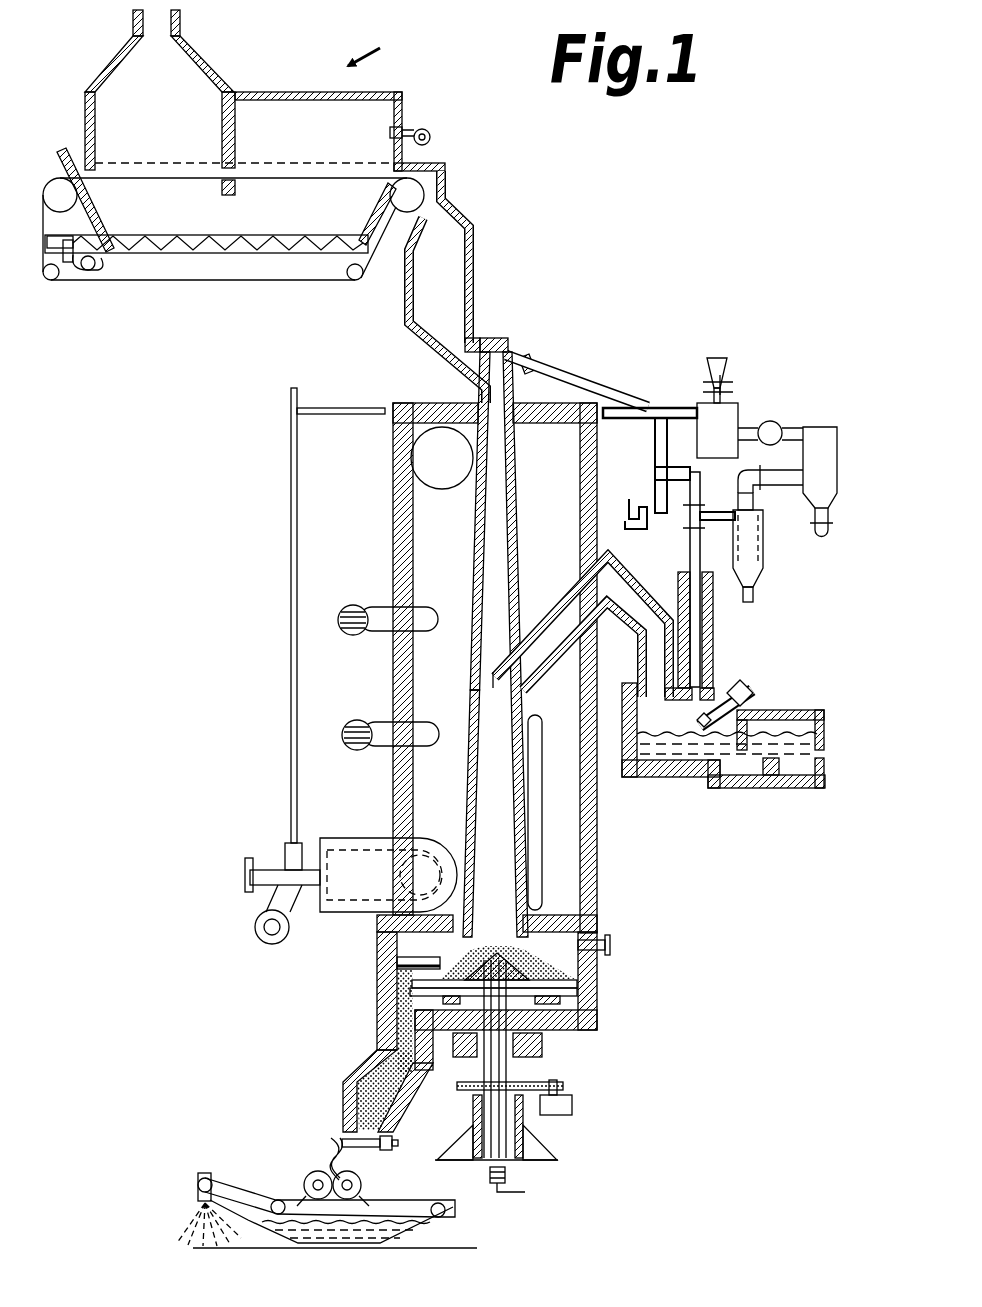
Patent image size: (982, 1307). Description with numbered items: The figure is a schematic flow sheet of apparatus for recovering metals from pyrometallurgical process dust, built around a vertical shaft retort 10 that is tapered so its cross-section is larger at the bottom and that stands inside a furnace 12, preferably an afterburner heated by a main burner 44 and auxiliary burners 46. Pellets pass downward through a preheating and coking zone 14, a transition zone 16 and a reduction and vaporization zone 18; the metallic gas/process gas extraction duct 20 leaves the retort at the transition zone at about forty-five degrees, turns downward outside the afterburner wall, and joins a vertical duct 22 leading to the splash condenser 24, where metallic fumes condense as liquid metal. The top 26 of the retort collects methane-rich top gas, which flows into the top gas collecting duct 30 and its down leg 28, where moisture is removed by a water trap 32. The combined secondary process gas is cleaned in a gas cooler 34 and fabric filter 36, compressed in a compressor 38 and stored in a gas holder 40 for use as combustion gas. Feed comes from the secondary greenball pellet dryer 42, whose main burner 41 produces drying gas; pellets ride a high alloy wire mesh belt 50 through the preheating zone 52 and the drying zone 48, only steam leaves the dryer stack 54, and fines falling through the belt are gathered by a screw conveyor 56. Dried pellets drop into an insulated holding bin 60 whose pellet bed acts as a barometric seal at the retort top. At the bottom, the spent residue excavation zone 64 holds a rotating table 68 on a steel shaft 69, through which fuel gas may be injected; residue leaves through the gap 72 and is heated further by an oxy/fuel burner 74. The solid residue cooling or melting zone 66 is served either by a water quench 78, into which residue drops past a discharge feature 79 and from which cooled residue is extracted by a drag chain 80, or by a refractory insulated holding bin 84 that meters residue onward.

The vertical shaft retort 10 is at (497, 644).
The furnace 12 is at (395, 500).
The preheating and coking zone 14 is at (462, 673).
The transition zone 16 is at (467, 673).
The reduction and vaporization zone 18 is at (530, 720).
The metallic gas/process gas extraction duct 20 is at (560, 597).
The vertical duct 22 is at (628, 626).
The splash condenser 24 is at (823, 712).
The top of the shaft retort 26 is at (511, 380).
The down leg 28 is at (656, 465).
The top gas collecting duct 30 is at (586, 372).
The water trap 32 is at (662, 532).
The gas cooler 34 is at (768, 558).
The fabric filter 36 is at (838, 453).
The compressor 38 is at (777, 420).
The gas holder 40 is at (742, 406).
The main burner of the dryer 41 is at (431, 137).
The secondary greenball pellet dryer 42 is at (379, 42).
The main burner 44 is at (261, 867).
The auxiliary burners 46 is at (353, 633).
The drying zone 48 is at (320, 147).
The high alloy wire mesh belt 50 is at (140, 179).
The preheating zone 52 is at (160, 147).
The dryer stack 54 is at (180, 31).
The screw conveyor 56 is at (230, 240).
The insulated holding bin 60 is at (473, 284).
The spent residue excavation zone 64 is at (393, 938).
The solid residue cooling or melting zone 66 is at (377, 1034).
The rotating table 68 is at (598, 985).
The steel shaft 69 is at (513, 1062).
The gap 72 is at (402, 953).
The oxy/fuel burner 74 is at (612, 945).
The water quench 78 is at (230, 1168).
The nozzle 79 is at (325, 1156).
The drag chain 80 is at (380, 1203).
The refractory insulated holding bin 84 is at (343, 1112).